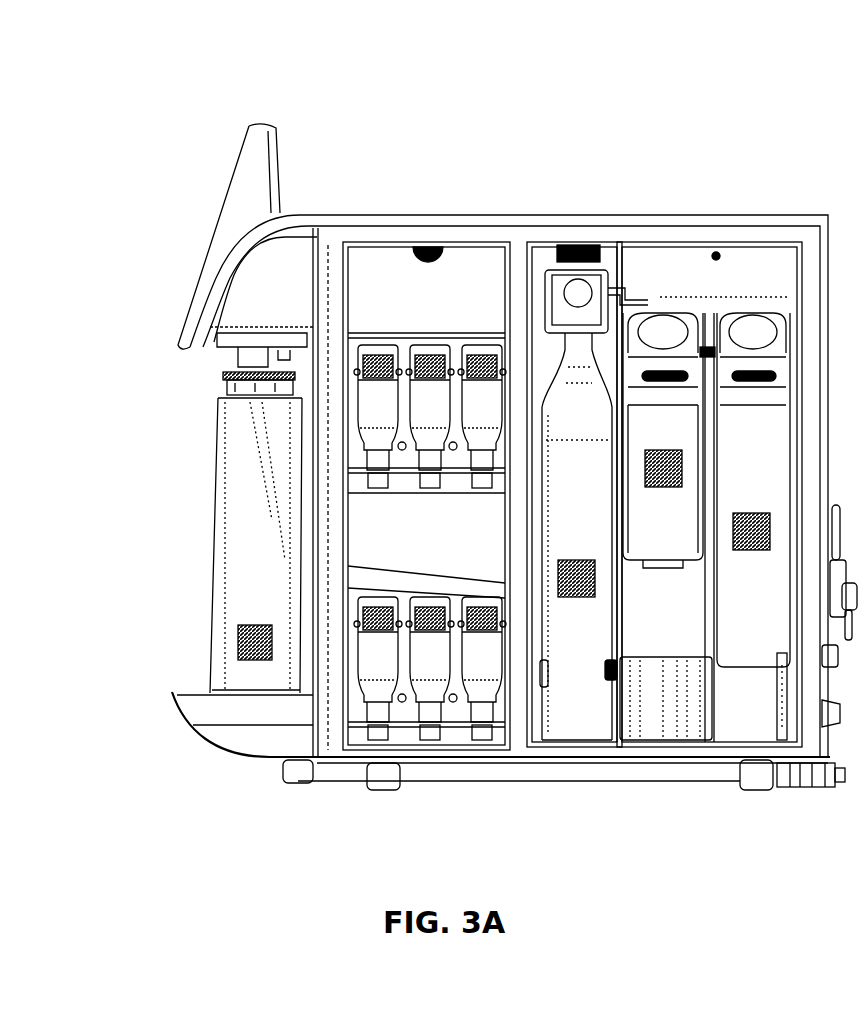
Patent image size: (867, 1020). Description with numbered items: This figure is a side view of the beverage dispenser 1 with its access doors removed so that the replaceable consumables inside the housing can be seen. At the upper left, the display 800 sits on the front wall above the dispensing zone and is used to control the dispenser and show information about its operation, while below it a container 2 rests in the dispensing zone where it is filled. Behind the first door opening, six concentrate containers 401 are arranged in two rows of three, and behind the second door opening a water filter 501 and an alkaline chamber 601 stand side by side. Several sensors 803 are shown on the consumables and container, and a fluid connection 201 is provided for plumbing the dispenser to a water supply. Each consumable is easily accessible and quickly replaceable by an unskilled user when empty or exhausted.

The beverage dispenser 1 is at (211, 68).
The display 800 is at (232, 177).
The sensor 803 is at (482, 355).
The container 2 is at (247, 495).
The concentrate container 401 is at (330, 535).
The water filter 501 is at (592, 705).
The alkaline chamber 601 is at (683, 540).
The fluid connection 201 is at (777, 655).